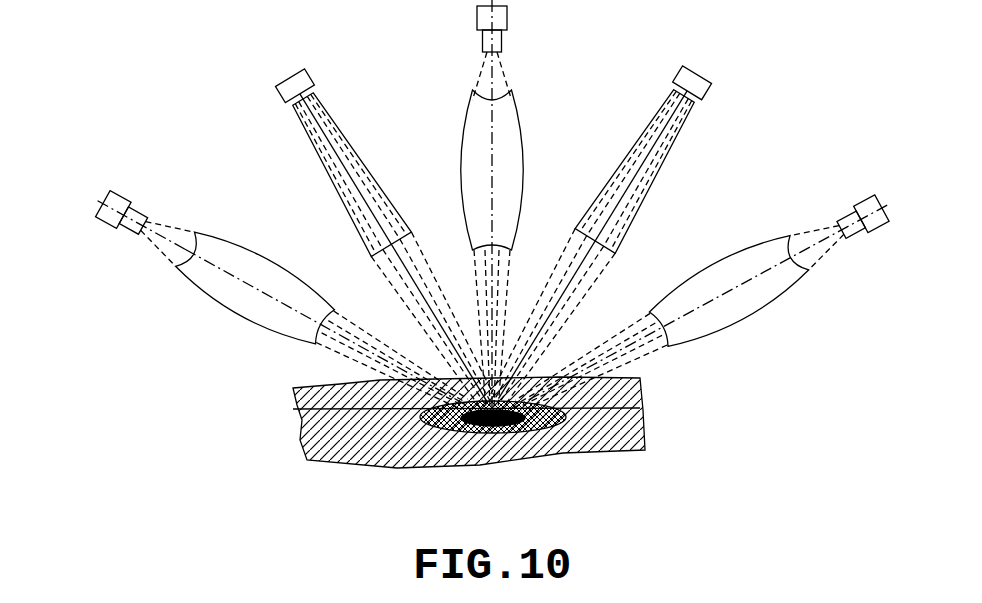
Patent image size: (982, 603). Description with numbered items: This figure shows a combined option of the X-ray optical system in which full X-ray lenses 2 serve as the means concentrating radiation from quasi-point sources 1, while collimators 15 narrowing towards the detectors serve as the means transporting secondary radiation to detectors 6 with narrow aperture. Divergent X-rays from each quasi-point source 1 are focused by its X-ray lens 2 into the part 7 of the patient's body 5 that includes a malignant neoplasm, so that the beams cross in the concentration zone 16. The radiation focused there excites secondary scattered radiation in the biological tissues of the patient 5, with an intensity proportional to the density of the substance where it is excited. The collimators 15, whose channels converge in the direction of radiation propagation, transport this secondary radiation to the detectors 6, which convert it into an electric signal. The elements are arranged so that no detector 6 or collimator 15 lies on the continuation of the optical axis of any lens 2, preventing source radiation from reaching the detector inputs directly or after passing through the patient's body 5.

The quasi-point X-ray source 1 is at (112, 221).
The X-ray lens 2 is at (205, 277).
The patient's body 5 is at (343, 440).
The detector 6 is at (290, 89).
The part of the patient's body 7 is at (640, 408).
The collimator 15 is at (307, 137).
The concentration zone 16 is at (293, 409).